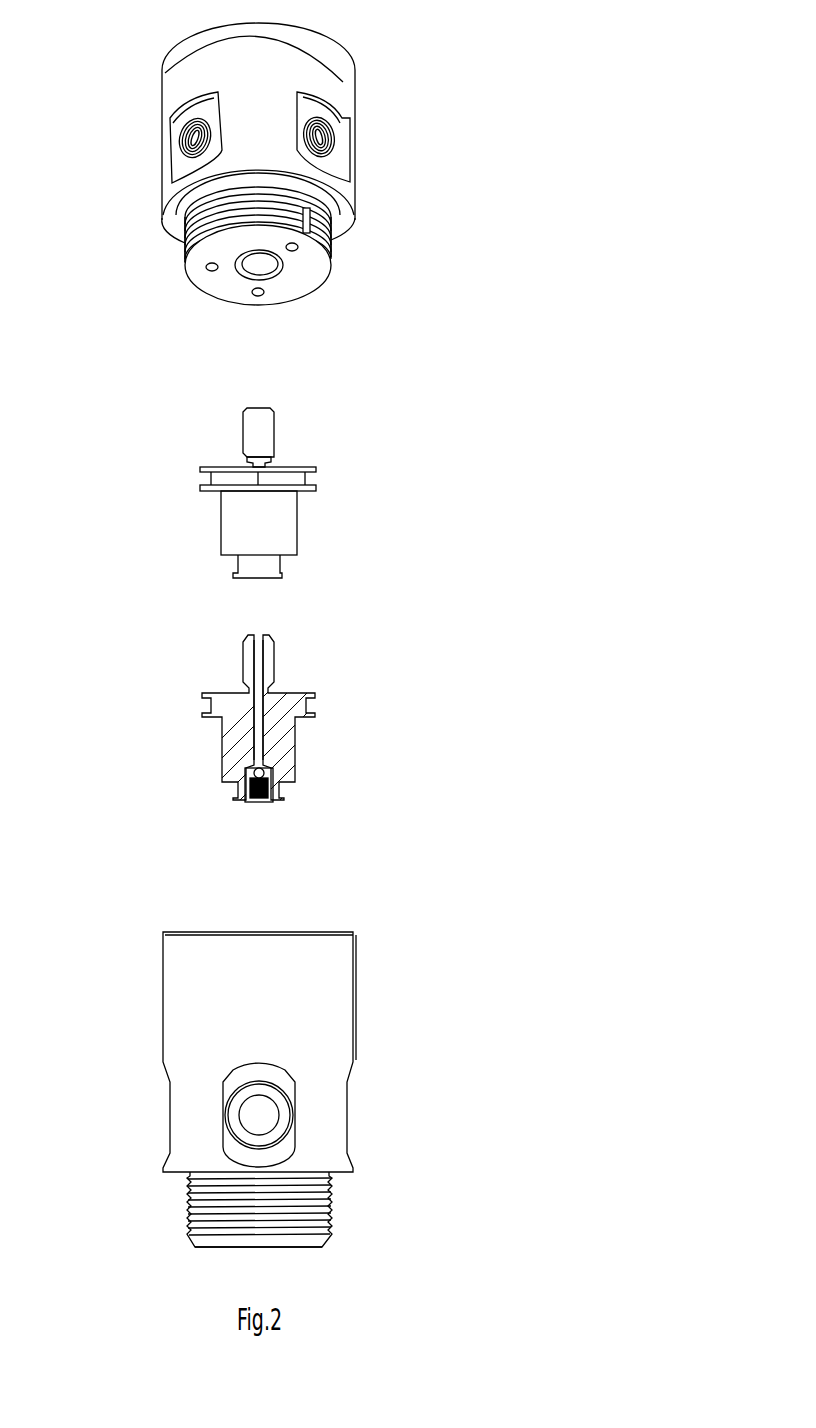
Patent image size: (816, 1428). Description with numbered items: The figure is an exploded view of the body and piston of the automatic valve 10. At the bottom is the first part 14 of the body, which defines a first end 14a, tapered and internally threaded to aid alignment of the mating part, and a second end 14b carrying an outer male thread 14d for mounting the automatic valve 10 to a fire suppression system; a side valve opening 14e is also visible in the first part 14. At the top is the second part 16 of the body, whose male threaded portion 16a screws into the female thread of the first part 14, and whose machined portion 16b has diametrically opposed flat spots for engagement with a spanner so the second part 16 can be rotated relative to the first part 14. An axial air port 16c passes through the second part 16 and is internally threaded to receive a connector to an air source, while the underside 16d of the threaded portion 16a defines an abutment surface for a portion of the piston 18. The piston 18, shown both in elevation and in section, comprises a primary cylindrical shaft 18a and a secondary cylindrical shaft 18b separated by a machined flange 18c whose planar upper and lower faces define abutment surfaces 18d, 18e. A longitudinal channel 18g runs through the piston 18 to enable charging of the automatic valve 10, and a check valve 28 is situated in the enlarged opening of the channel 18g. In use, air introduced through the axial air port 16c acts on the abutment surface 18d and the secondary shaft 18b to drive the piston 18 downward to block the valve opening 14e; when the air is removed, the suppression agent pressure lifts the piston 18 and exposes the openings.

The automatic valve 10 is at (210, 362).
The first part of the body 14 is at (300, 1012).
The first end 14a is at (278, 932).
The second end 14b is at (230, 1247).
The outer male thread 14d is at (192, 1213).
The valve opening 14e is at (258, 1115).
The second part of the body 16 is at (335, 85).
The male threaded portion 16a is at (330, 232).
The machined portion 16b is at (332, 117).
The axial air port 16c is at (263, 260).
The underside of the threaded portion 16d is at (230, 280).
The piston 18 is at (283, 745).
The primary cylindrical shaft 18a is at (287, 528).
The secondary cylindrical shaft 18b is at (265, 432).
The machined flange 18c is at (295, 478).
The upper abutment surface 18d is at (225, 465).
The lower abutment surface 18e is at (215, 490).
The channel 18g is at (260, 672).
The check valve 28 is at (243, 790).